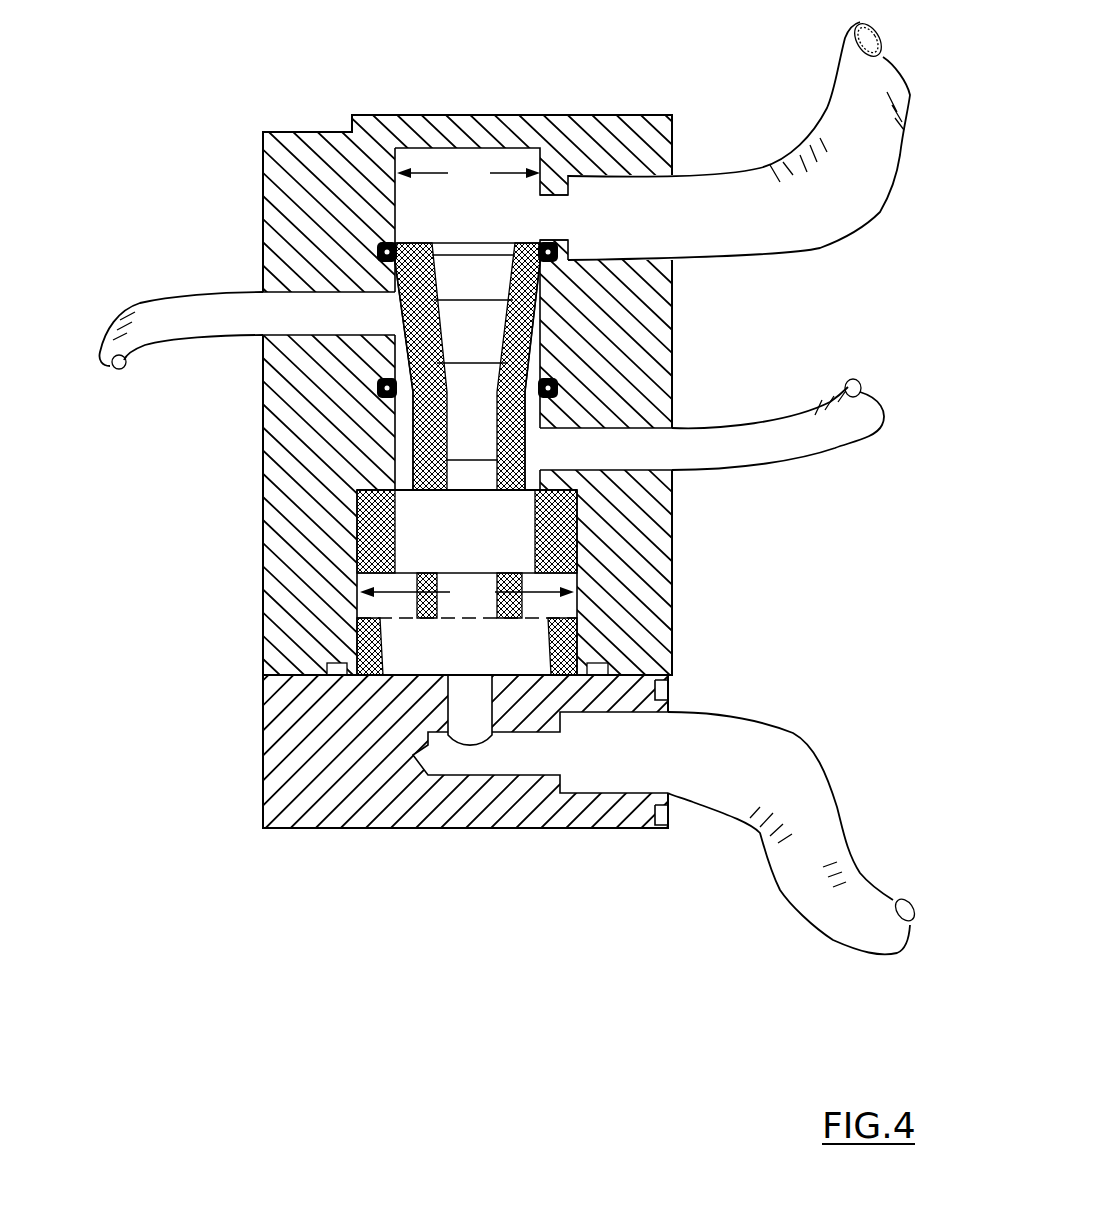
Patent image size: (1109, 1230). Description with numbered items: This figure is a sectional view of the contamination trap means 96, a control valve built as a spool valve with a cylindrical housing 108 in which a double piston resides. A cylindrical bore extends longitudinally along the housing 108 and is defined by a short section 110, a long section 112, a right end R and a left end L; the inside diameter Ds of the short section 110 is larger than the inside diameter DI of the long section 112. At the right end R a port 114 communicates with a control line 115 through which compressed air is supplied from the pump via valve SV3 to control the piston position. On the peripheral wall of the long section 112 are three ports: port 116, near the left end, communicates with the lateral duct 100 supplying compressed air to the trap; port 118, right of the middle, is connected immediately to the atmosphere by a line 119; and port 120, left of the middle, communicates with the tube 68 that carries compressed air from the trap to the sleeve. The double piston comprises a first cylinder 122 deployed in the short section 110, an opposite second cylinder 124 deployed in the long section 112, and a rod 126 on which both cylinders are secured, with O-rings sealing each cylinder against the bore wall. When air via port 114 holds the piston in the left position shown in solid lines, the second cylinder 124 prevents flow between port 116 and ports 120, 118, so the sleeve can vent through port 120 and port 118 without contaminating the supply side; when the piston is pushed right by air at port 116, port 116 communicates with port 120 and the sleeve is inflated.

The contamination trap means 96 is at (800, 578).
The lateral duct 100 is at (843, 85).
The cylindrical housing 108 is at (652, 398).
The short section 110 is at (580, 595).
The long section 112 is at (579, 366).
The port 114 is at (448, 681).
The control line 115 is at (800, 770).
The port 116 is at (663, 172).
The port 118 is at (655, 468).
The line 119 is at (843, 430).
The port 120 is at (290, 300).
The first cylinder 122 is at (510, 543).
The second cylinder 124 is at (500, 290).
The rod 126 is at (498, 430).
The tube 68 is at (145, 335).
The left end L is at (450, 150).
The right end R is at (517, 673).
The inside diameter of the long section DI is at (468, 173).
The inside diameter of the short section Ds is at (467, 593).